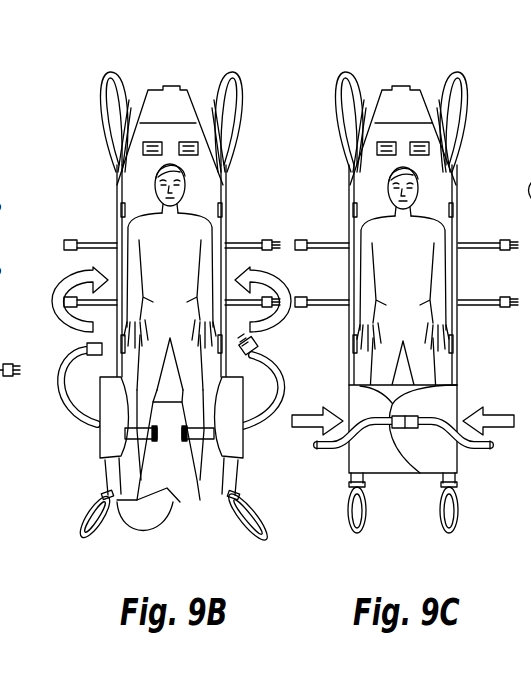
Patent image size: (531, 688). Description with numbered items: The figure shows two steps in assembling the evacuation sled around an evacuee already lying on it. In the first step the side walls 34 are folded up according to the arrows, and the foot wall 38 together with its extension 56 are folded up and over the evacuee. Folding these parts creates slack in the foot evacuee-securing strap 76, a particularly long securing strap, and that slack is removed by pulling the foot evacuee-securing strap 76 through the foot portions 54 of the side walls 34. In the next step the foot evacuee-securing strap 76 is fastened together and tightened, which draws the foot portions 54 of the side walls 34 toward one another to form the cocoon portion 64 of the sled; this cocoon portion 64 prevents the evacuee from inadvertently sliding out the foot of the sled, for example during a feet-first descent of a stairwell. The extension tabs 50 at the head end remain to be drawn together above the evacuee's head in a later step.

In FIG. 9B, the side walls 34 is at (117, 193).
In FIG. 9C, the side walls 34 is at (350, 225).
In FIG. 9B, the foot wall 38 is at (190, 493).
In FIG. 9C, the extension tabs 50 is at (347, 172).
In FIG. 9B, the foot portions 54 is at (107, 448).
In FIG. 9C, the foot portions 54 is at (417, 462).
In FIG. 9B, the extension 56 is at (232, 470).
In FIG. 9C, the cocoon portion 64 is at (440, 400).
In FIG. 9B, the foot evacuee-securing strap 76 is at (80, 427).
In FIG. 9C, the foot evacuee-securing strap 76 is at (477, 448).